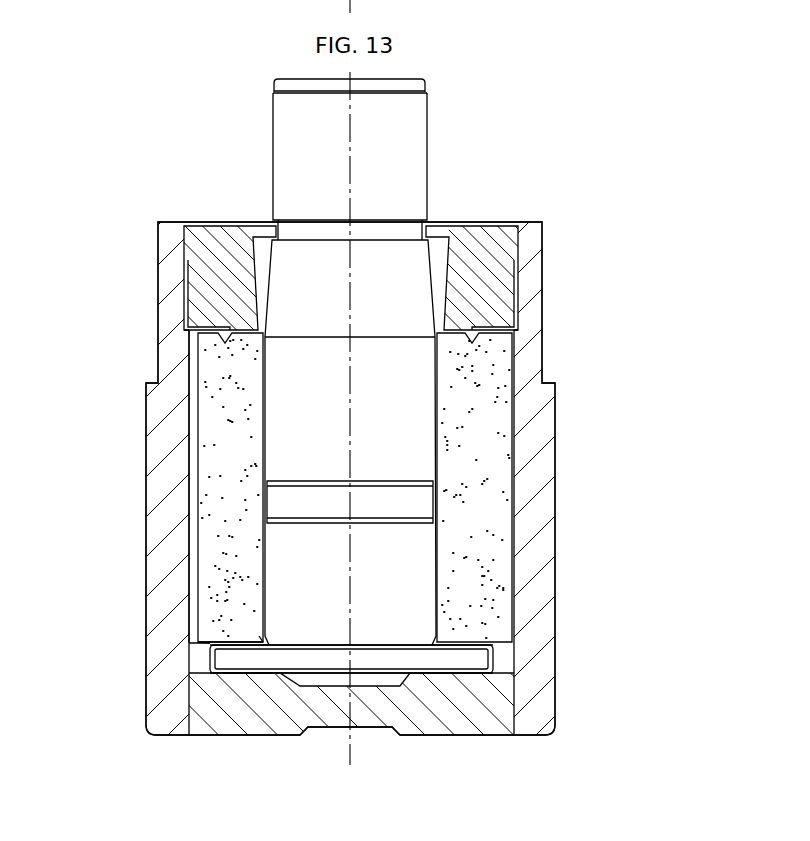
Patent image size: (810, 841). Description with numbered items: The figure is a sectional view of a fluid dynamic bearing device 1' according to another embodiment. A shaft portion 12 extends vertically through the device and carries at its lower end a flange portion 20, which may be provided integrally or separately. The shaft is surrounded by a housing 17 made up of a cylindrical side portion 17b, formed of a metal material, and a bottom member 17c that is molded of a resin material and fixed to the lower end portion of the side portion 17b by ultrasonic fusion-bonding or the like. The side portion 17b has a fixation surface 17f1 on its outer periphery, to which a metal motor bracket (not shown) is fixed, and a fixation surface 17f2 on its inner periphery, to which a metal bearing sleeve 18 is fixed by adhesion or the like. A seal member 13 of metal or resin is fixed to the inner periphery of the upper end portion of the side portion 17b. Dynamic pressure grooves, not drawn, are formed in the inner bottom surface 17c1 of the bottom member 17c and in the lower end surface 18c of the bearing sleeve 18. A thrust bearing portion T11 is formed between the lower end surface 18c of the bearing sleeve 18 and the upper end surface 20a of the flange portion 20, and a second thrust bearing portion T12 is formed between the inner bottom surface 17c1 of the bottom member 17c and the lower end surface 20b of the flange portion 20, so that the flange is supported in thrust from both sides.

The fluid dynamic bearing device 1' is at (439, 432).
The shaft portion 12 is at (436, 159).
The seal member 13 is at (200, 273).
The housing 17 is at (510, 749).
The side portion 17b is at (160, 489).
The bottom member 17c is at (408, 717).
The inner bottom surface 17c1 is at (273, 669).
The fixation surface 17f1 is at (147, 535).
The fixation surface 17f2 is at (190, 423).
The bearing sleeve 18 is at (523, 368).
The lower end surface 18c is at (238, 656).
The flange portion 20 is at (489, 664).
The upper end surface 20a is at (468, 642).
The lower end surface 20b is at (462, 675).
The thrust bearing portion T11 is at (222, 636).
The thrust bearing portion T12 is at (243, 683).